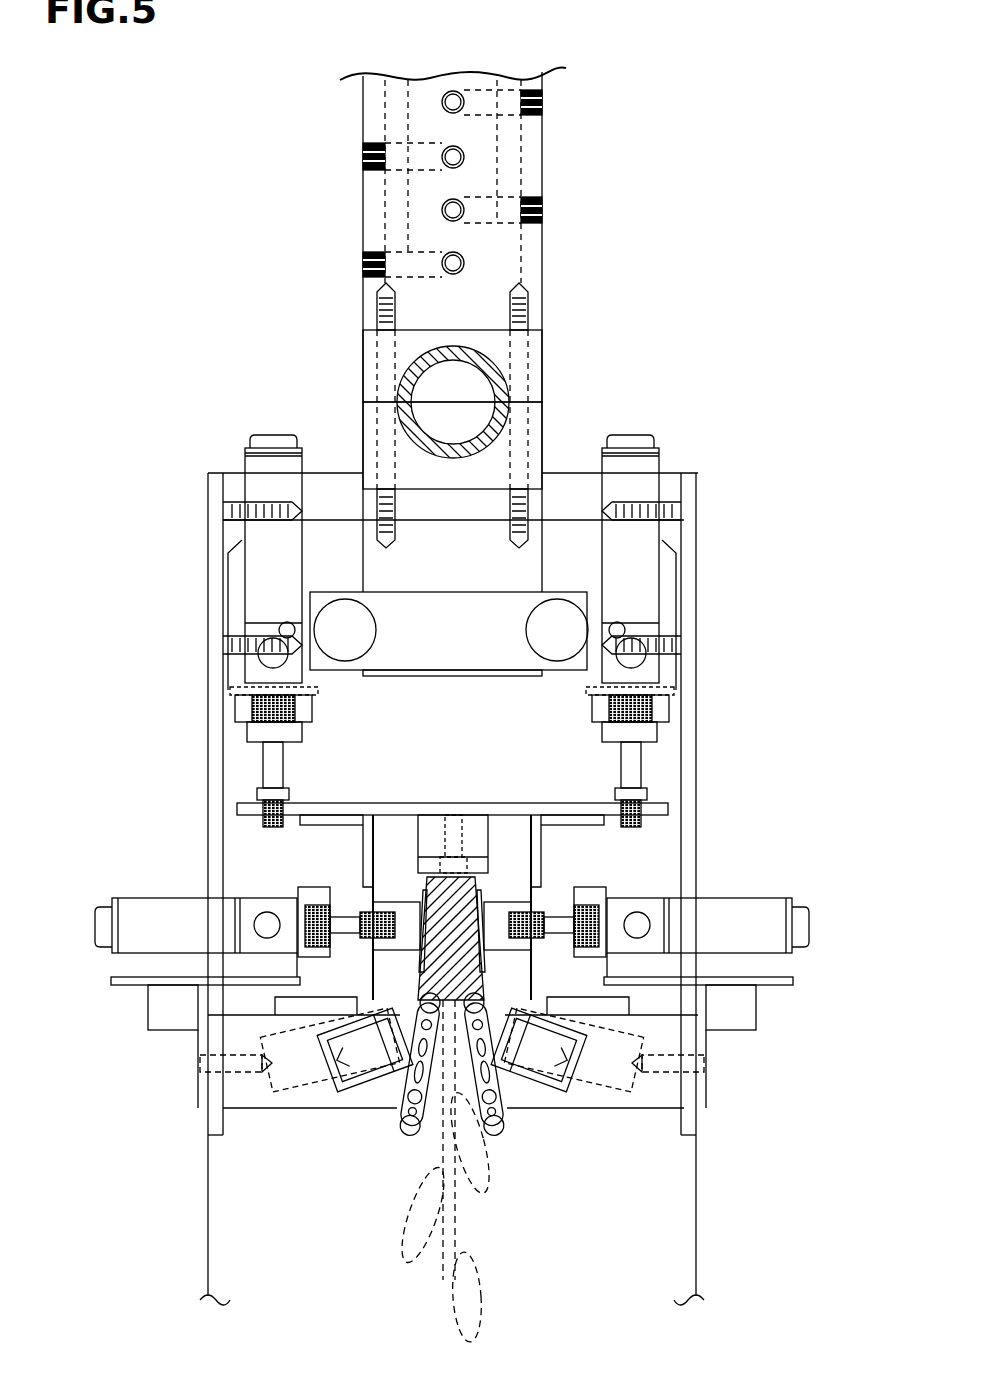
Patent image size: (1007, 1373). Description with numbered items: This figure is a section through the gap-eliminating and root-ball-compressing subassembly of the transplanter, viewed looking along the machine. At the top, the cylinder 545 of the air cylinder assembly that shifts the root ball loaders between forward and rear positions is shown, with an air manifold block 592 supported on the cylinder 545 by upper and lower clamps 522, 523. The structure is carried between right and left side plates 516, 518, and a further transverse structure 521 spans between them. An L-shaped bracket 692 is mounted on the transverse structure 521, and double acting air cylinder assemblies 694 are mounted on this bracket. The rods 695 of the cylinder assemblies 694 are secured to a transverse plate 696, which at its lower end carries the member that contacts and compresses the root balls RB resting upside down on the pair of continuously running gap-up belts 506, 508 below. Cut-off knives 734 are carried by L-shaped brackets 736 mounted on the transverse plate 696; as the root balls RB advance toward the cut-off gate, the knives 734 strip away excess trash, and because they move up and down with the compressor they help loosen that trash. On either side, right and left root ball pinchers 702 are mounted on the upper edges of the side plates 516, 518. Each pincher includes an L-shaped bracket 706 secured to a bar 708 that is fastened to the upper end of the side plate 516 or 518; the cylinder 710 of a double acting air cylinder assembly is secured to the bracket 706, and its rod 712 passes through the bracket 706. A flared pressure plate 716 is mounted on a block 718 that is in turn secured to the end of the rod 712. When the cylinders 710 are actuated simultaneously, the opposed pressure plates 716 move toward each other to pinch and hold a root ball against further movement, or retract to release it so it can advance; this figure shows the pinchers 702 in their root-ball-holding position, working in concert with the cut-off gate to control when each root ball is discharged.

The air manifold block 592 is at (527, 255).
The upper clamp 522 is at (535, 370).
The lower clamp 523 is at (535, 445).
The cylinder 545 is at (400, 390).
The further transverse structure 521 is at (586, 490).
The right side plate 516 is at (213, 790).
The left side plate 518 is at (692, 790).
The double acting air cylinder assemblies 694 is at (275, 570).
The rods 695 is at (272, 765).
The L-shaped bracket 692 is at (438, 570).
The transverse plate 696 is at (438, 808).
The L-shaped brackets 736 is at (335, 820).
The cut-off knives 734 is at (377, 832).
The block 718 is at (410, 935).
The flared pressure plate 716 is at (352, 922).
The rod 712 is at (355, 905).
The cylinder 710 is at (165, 920).
The L-shaped bracket 706 is at (122, 977).
The bar 708 is at (155, 1005).
The root ball pinchers 702 is at (122, 882).
The root balls RB is at (462, 880).
The gap-up belt 508 is at (403, 1130).
The gap-up belt 506 is at (502, 1133).